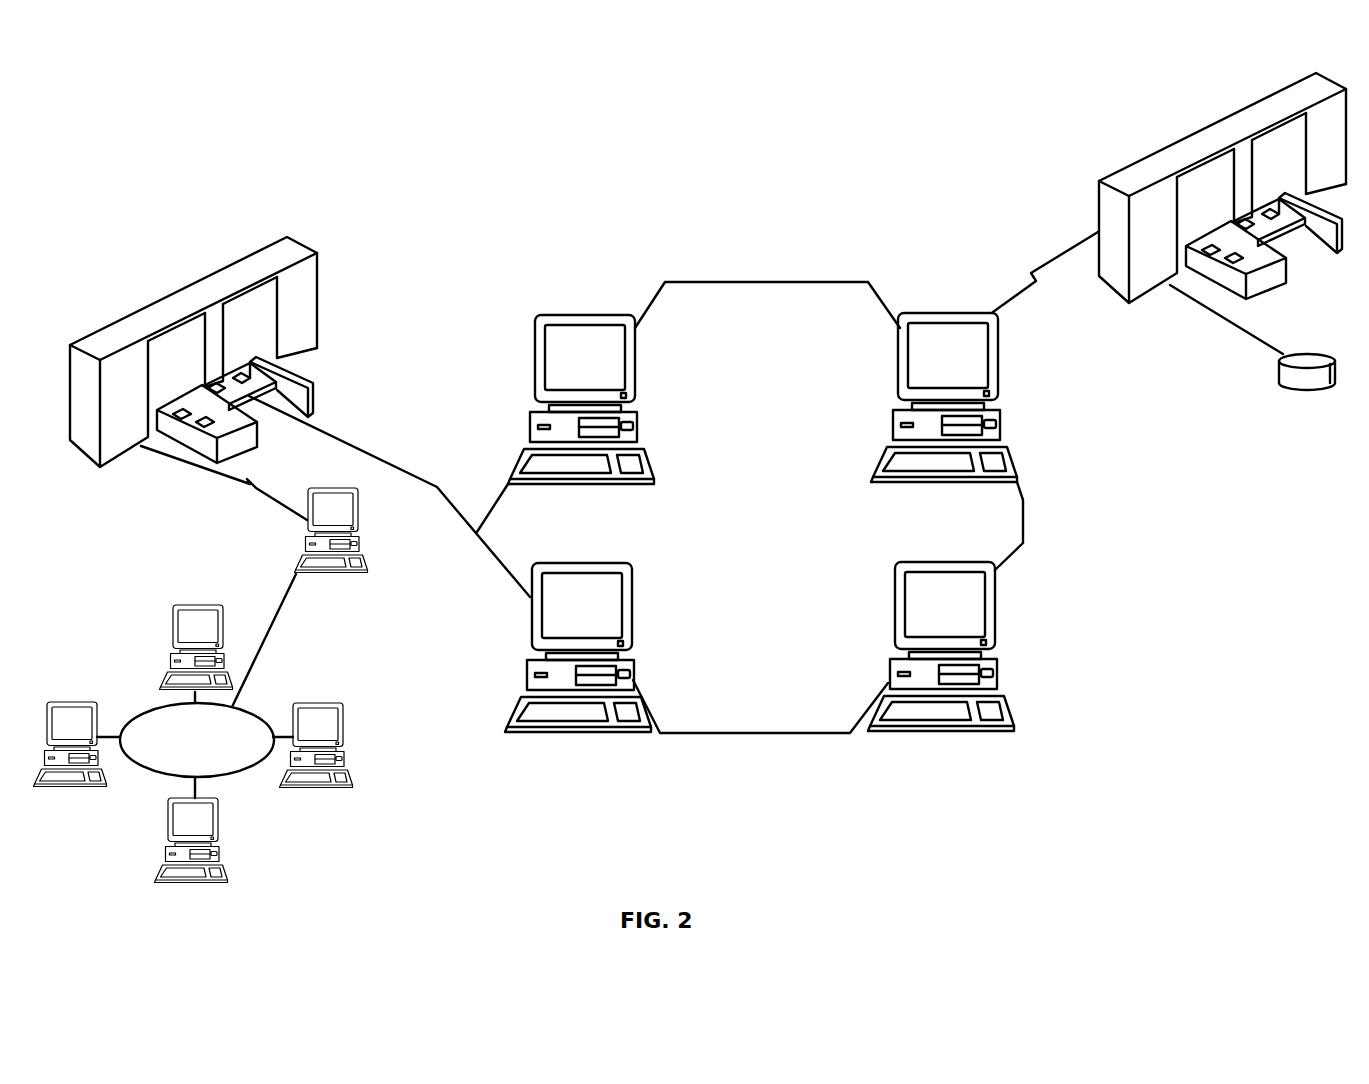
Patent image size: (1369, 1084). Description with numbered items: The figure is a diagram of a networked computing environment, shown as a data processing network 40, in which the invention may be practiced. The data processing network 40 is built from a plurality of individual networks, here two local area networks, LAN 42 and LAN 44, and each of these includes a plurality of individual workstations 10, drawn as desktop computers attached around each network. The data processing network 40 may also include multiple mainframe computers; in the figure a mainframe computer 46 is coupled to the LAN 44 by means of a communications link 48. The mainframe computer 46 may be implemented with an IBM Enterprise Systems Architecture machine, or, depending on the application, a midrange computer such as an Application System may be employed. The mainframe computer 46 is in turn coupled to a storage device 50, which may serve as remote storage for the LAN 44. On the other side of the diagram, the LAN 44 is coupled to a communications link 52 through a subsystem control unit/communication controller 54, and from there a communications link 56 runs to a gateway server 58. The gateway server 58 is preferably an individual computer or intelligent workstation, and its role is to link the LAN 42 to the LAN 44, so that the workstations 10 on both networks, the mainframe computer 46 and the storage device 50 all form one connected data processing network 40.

The workstation 10 is at (583, 315).
The data processing network 40 is at (812, 265).
The LAN 42 is at (196, 703).
The LAN 44 is at (750, 507).
The mainframe computer 46 is at (1177, 143).
The communications link 48 is at (1076, 247).
The storage device 50 is at (1315, 353).
The communications link 52 is at (356, 446).
The subsystem control unit/communication controller 54 is at (190, 284).
The communications link 56 is at (197, 465).
The gateway server 58 is at (358, 513).